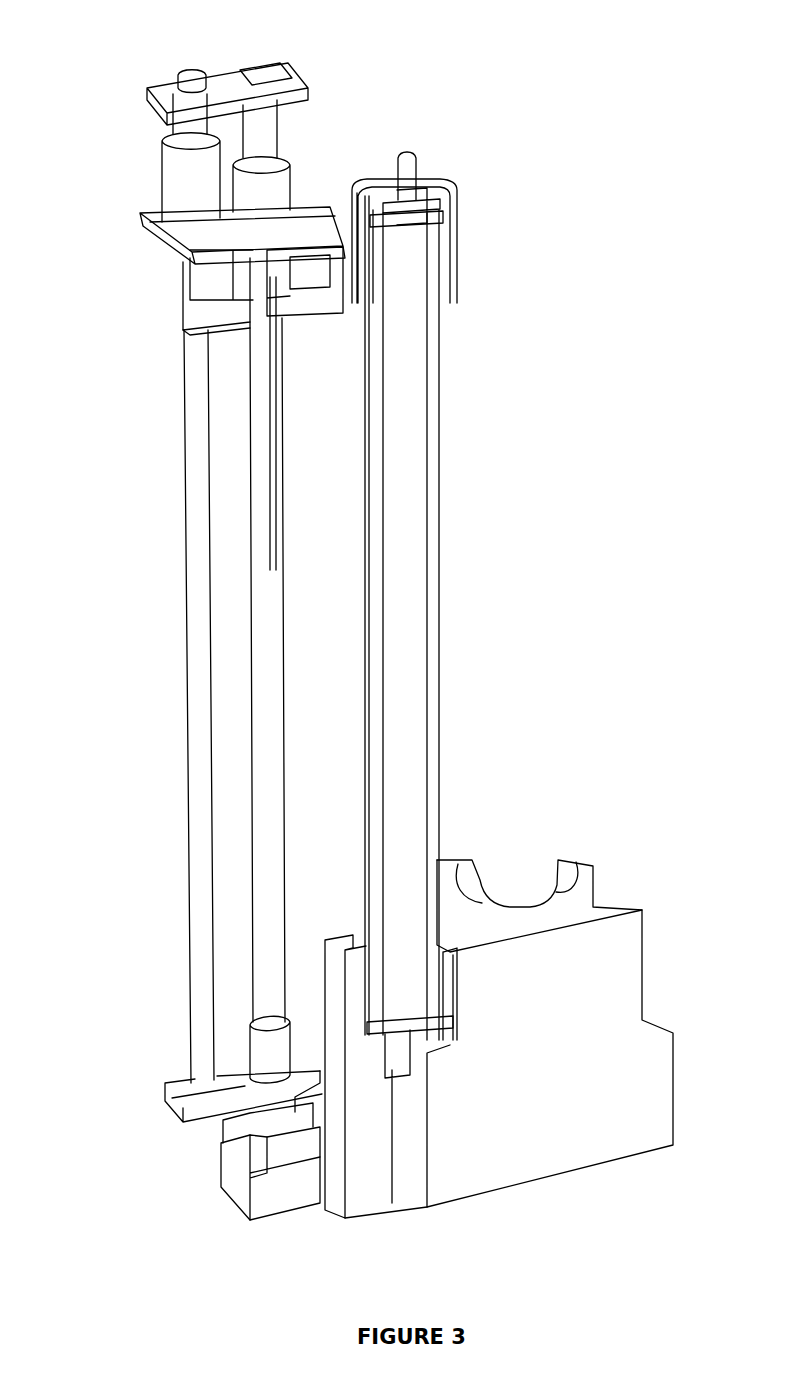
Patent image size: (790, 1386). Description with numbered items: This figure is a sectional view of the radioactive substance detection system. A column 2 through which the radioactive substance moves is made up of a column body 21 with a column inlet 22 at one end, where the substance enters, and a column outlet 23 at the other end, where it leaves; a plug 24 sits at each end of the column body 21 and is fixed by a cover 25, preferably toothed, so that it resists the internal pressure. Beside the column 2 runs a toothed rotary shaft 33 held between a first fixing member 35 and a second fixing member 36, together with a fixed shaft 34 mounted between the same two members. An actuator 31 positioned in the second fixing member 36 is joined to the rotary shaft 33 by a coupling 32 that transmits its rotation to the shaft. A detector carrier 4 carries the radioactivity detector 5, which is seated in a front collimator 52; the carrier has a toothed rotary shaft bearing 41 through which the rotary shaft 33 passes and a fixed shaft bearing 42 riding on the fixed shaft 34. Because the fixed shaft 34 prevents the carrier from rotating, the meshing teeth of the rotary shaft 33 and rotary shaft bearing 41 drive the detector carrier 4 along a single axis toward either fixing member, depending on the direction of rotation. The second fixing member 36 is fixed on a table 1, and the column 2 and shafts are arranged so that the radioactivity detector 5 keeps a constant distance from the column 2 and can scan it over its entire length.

The table 1 is at (614, 1168).
The column 2 is at (612, 359).
The detector carrier 4 is at (150, 252).
The radioactivity detector 5 is at (312, 282).
The column body 21 is at (445, 540).
The column inlet 22 is at (403, 146).
The column outlet 23 is at (403, 1100).
The plug 24 is at (413, 235).
The cover 25 is at (455, 235).
The actuator 31 is at (265, 1240).
The coupling 32 is at (249, 1043).
The rotary shaft 33 is at (288, 611).
The fixed shaft 34 is at (176, 617).
The first fixing member 35 is at (220, 60).
The second fixing member 36 is at (161, 1093).
The rotary shaft bearing 41 is at (298, 176).
The fixed shaft bearing 42 is at (160, 181).
The front collimator 52 is at (333, 243).